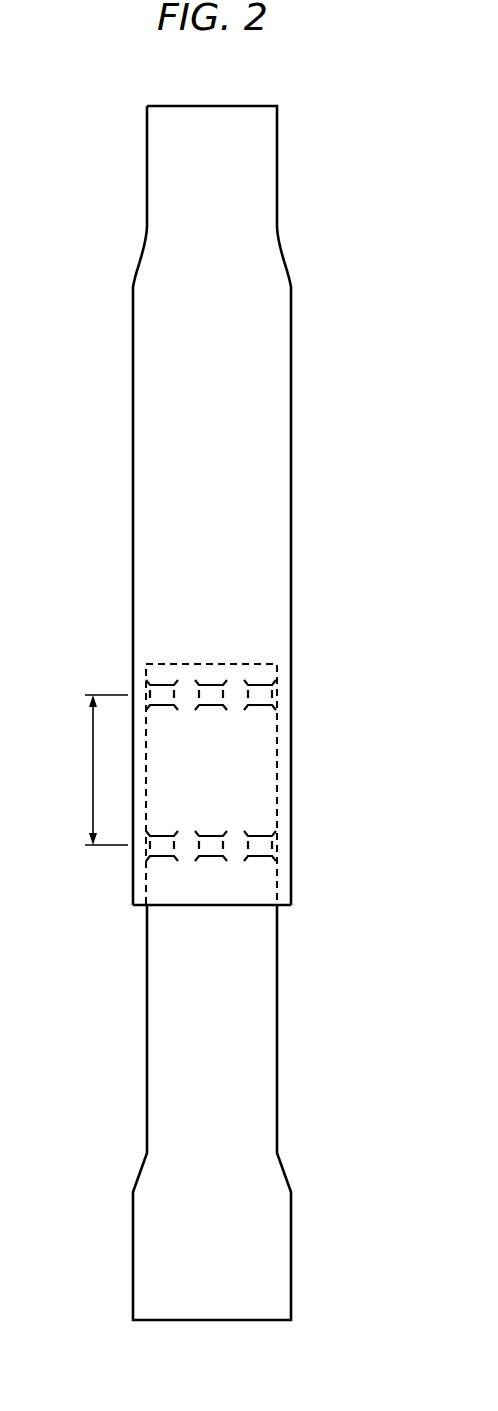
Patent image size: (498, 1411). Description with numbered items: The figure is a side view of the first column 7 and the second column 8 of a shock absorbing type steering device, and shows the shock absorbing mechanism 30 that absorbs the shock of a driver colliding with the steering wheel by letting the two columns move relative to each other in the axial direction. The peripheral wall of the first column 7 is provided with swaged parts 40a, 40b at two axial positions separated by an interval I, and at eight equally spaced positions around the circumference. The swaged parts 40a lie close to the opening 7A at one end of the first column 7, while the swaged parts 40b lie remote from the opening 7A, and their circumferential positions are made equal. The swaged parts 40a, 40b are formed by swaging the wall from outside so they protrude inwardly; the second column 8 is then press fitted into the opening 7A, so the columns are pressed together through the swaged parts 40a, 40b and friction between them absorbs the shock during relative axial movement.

The first column 7 is at (262, 424).
The opening 7A is at (240, 906).
The second column 8 is at (258, 1009).
The shock absorbing mechanism 30 is at (280, 690).
The swaged parts 40b is at (162, 690).
The swaged parts 40a is at (166, 850).
The interval I is at (92, 757).